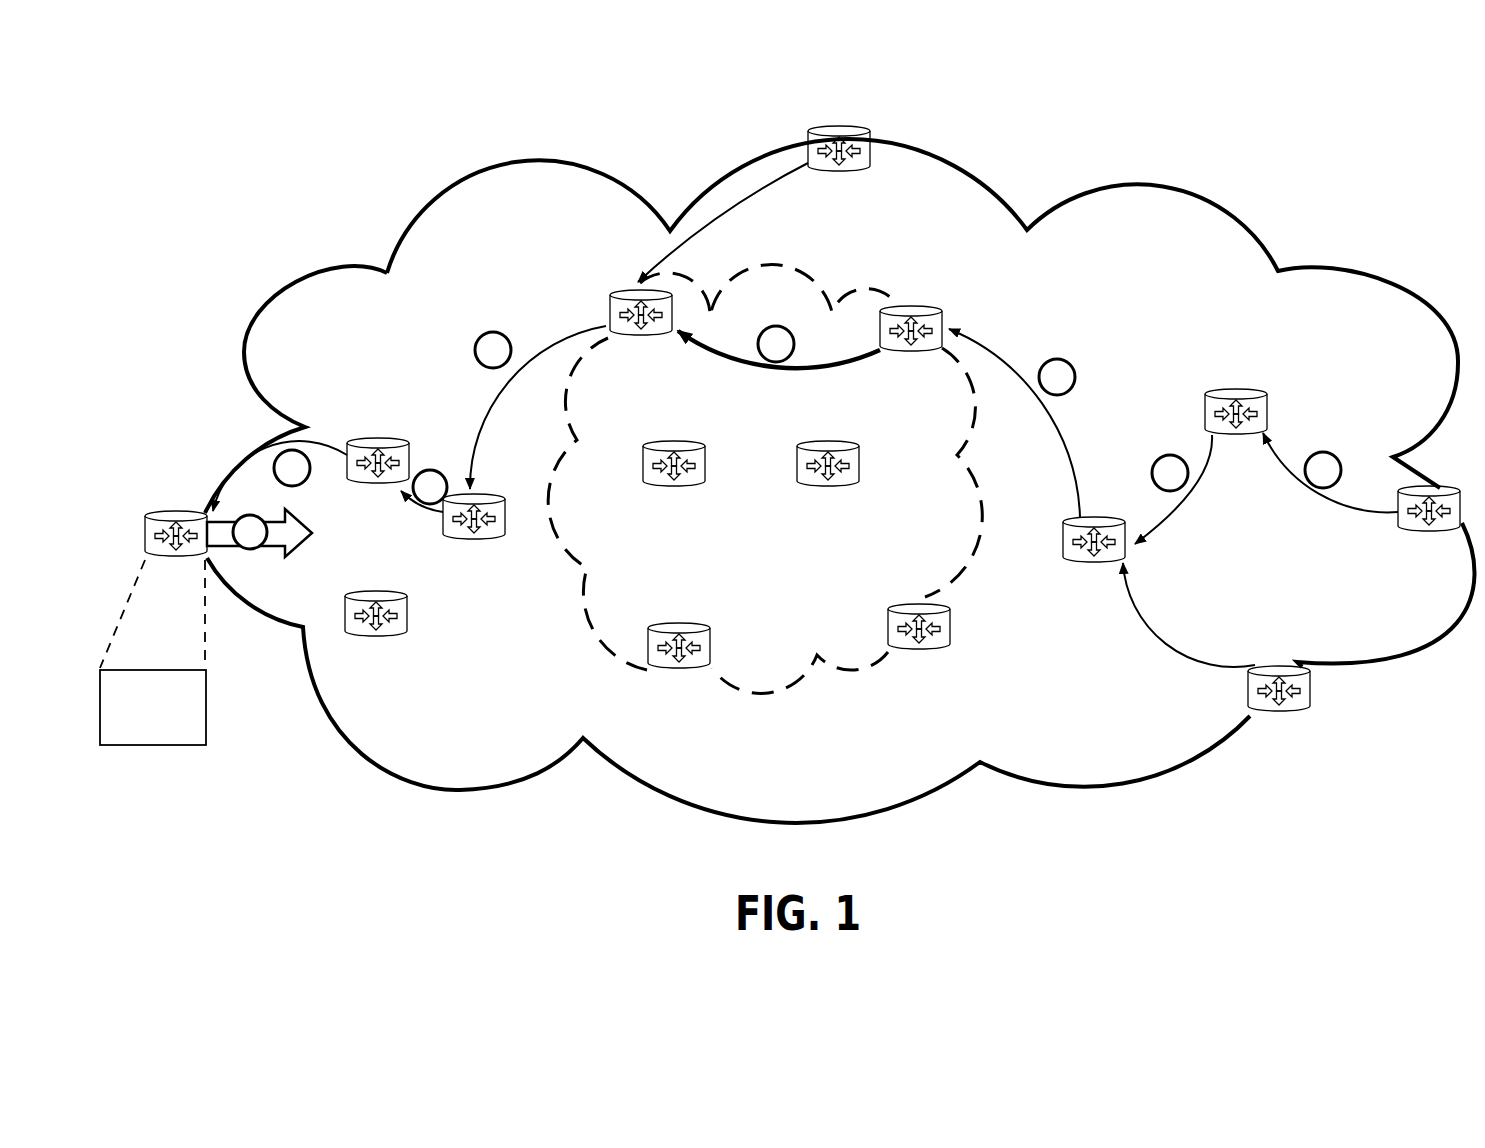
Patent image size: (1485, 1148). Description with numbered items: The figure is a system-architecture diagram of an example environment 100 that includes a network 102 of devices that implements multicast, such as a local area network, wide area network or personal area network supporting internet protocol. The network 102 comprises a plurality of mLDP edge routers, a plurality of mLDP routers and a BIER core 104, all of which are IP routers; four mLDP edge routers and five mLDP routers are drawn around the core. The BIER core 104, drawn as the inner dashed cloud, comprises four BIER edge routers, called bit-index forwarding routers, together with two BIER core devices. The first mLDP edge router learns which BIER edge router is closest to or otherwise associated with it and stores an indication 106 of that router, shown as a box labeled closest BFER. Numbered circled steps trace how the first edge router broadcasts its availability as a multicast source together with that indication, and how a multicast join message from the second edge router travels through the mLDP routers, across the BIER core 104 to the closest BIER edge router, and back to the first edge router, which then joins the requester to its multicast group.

The environment 100 is at (1213, 115).
The network 102 is at (963, 165).
The BIER core 104 is at (850, 292).
The stored indication of the closest BIER edge router 106 is at (207, 718).